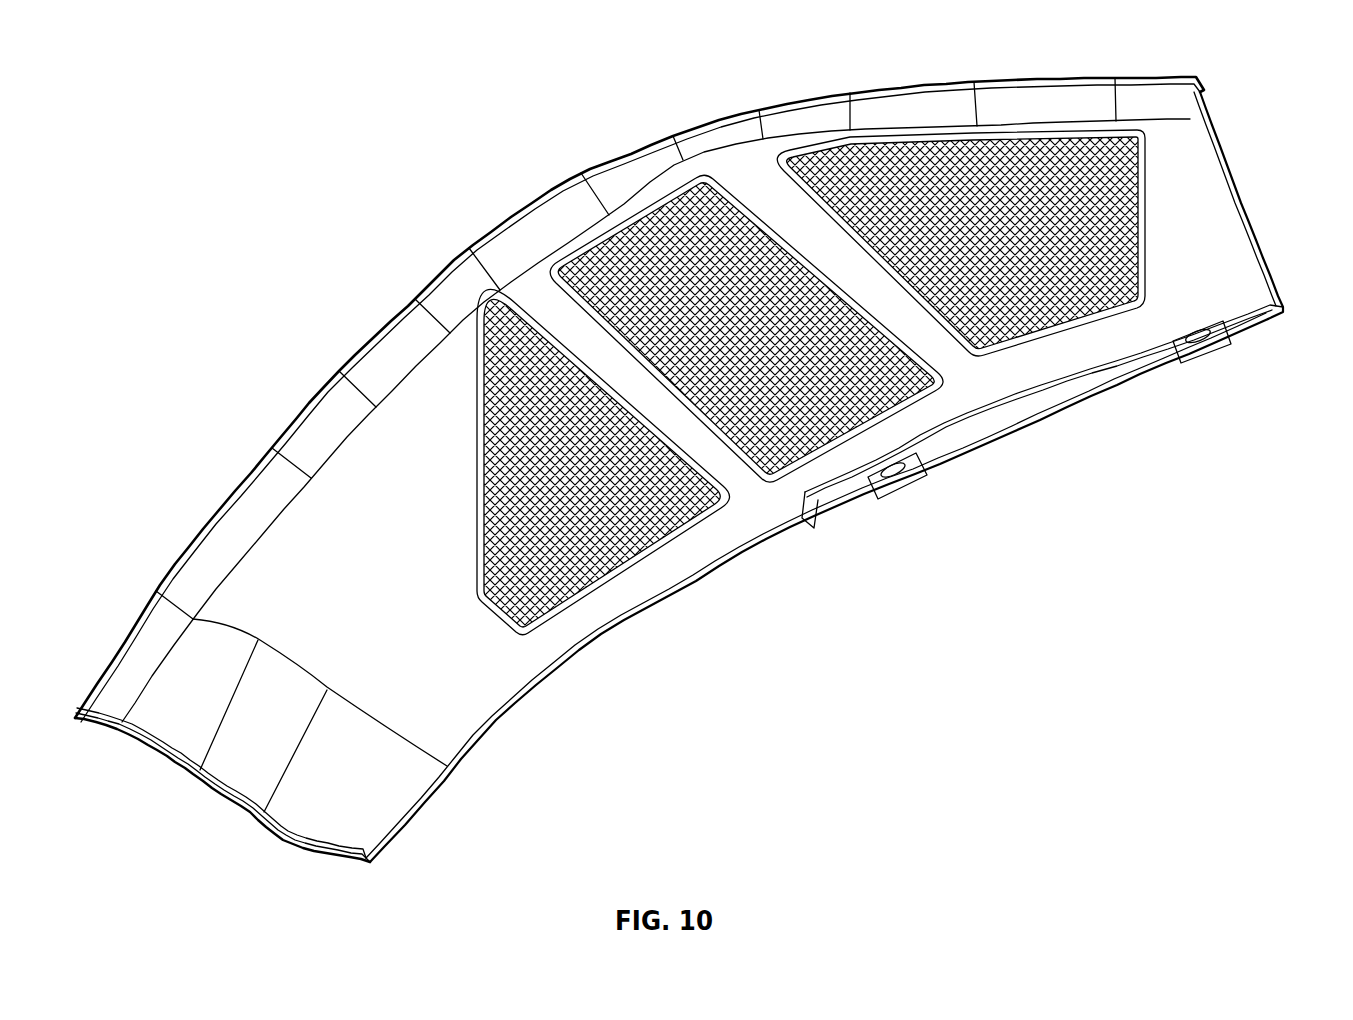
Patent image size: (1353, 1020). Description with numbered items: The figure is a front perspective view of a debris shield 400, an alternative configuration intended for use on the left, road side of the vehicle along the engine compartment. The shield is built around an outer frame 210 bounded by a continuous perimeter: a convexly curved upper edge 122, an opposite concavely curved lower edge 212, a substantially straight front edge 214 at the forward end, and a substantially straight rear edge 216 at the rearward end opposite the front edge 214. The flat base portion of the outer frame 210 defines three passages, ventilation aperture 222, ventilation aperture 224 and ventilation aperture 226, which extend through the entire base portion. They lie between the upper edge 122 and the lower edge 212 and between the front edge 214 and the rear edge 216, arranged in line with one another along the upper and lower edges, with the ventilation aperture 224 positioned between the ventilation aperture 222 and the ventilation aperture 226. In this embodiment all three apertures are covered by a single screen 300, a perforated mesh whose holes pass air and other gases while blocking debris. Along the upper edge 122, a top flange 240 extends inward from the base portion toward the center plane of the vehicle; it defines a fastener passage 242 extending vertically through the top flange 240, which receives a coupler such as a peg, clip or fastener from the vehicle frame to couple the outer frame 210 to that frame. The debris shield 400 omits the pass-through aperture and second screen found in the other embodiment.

The debris shield 400 is at (702, 441).
The upper edge 122 is at (487, 243).
The outer frame 210 is at (233, 760).
The lower edge 212 is at (613, 627).
The front edge 214 is at (247, 813).
The rear edge 216 is at (1237, 188).
The ventilation aperture 222 is at (690, 533).
The ventilation aperture 224 is at (650, 207).
The ventilation aperture 226 is at (853, 127).
The top flange 240 is at (1030, 410).
The fastener passage 242 is at (900, 477).
The screen 300 is at (1010, 173).